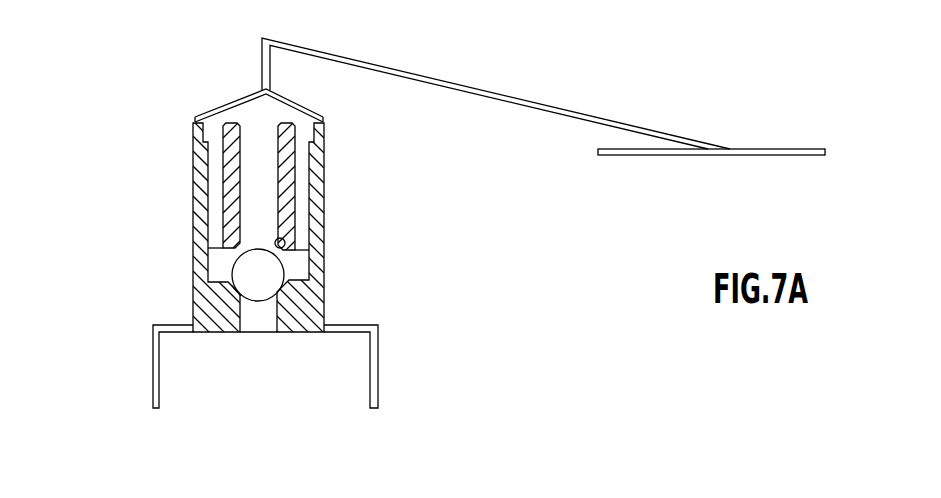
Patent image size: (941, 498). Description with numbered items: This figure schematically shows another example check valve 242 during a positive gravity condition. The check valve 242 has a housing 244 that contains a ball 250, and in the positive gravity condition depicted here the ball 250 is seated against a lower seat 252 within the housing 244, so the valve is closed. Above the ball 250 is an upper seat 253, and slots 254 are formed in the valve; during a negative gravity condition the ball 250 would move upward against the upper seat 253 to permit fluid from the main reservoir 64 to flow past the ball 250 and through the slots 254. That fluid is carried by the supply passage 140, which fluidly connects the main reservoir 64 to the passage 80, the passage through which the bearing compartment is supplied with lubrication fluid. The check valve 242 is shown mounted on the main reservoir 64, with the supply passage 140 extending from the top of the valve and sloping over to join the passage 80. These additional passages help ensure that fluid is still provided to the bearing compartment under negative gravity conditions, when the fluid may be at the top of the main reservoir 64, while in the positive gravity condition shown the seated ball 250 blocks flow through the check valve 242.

The supply passage 140 is at (472, 87).
The passage 80 is at (793, 149).
The slots 254 is at (302, 177).
The upper seat 253 is at (285, 242).
The ball 250 is at (300, 267).
The check valve 242 is at (202, 265).
The housing 244 is at (315, 308).
The lower seat 252 is at (238, 290).
The main reservoir 64 is at (398, 366).